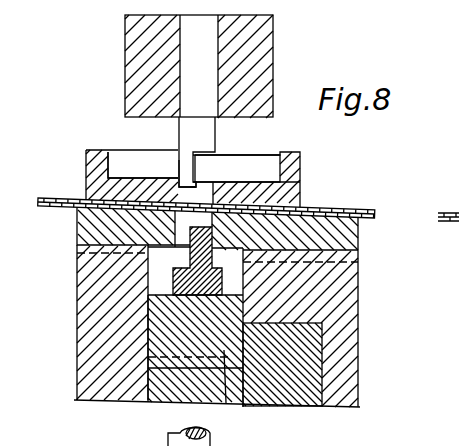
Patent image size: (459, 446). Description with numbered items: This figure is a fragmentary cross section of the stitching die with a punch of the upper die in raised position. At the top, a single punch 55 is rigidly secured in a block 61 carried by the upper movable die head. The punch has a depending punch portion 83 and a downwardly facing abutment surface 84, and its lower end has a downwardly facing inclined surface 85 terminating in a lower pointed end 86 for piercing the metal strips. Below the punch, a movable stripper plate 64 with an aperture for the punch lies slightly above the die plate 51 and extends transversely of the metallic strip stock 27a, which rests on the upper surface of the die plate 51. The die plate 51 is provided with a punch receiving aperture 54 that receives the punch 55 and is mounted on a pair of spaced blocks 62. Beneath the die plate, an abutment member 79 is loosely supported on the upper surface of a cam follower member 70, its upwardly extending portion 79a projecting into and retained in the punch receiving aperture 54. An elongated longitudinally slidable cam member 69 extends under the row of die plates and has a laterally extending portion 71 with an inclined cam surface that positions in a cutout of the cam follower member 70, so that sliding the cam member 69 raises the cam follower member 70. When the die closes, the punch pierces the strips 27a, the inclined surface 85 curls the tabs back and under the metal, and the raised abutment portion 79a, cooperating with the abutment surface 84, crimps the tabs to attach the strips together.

The block 61 is at (267, 52).
The single punch 55 is at (216, 131).
The downwardly facing abutment surface 84 is at (199, 148).
The depending punch portion 83 is at (177, 172).
The downwardly facing inclined surface 85 is at (192, 181).
The lower pointed end 86 is at (181, 183).
The stripper plate 64 is at (301, 196).
The metallic strip stock 27a is at (438, 214).
The punch receiving aperture 54 is at (180, 218).
The die plate 51 is at (345, 246).
The upwardly extending portion 79a is at (190, 252).
The abutment member 79 is at (236, 273).
The block 62 is at (78, 313).
The laterally extending portion 71 is at (170, 393).
The cam follower member 70 is at (225, 402).
The cam member 69 is at (302, 396).